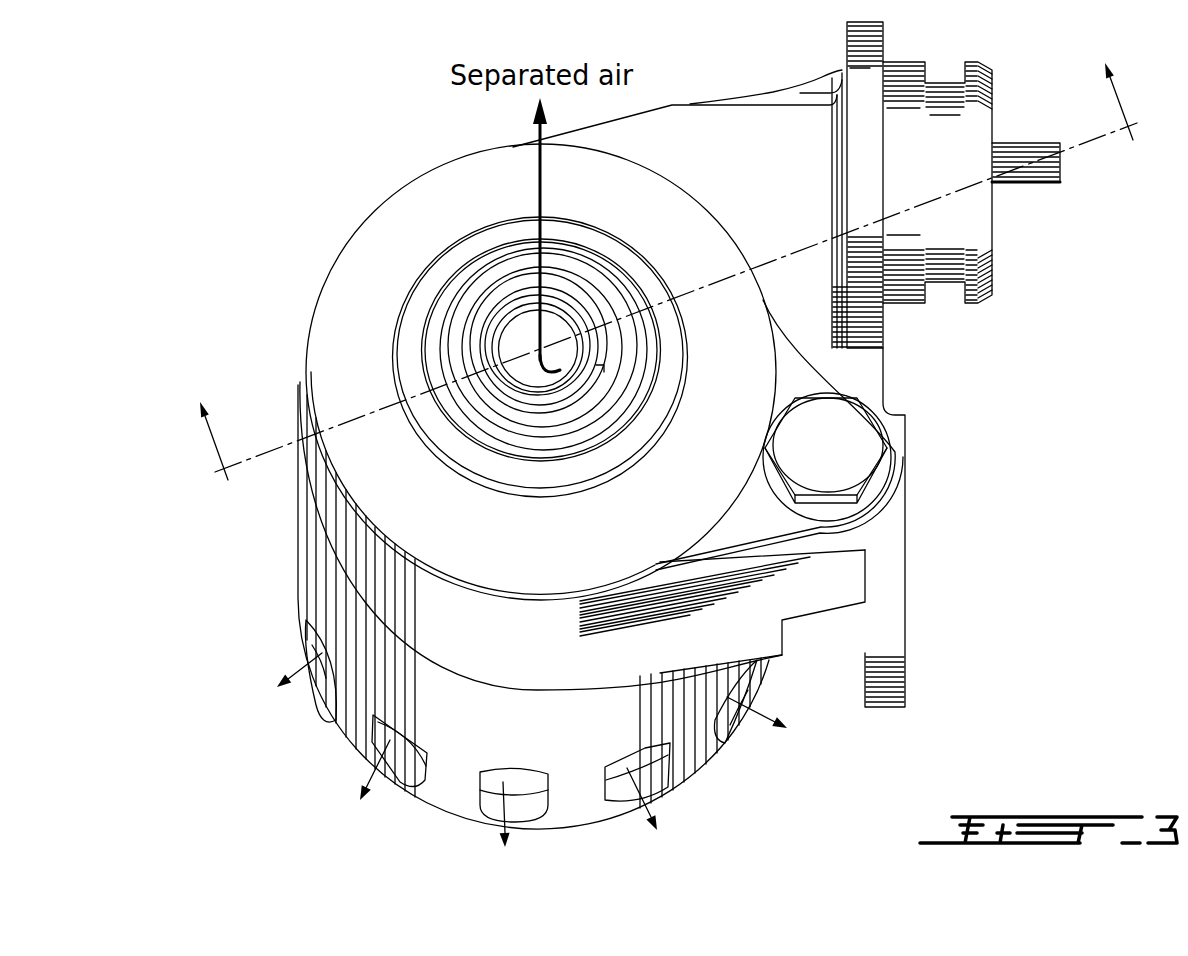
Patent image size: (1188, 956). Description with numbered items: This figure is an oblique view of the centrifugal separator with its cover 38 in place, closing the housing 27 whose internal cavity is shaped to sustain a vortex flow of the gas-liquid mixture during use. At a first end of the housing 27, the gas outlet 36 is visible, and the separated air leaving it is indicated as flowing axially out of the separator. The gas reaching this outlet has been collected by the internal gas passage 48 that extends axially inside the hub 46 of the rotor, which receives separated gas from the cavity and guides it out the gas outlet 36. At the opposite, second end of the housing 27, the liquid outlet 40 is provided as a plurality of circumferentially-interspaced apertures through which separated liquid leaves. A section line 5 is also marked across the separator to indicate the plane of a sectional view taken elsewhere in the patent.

The section line 5- 5 is at (678, 286).
The housing 27 is at (298, 381).
The gas outlet 36 is at (500, 347).
The cover 38 is at (390, 225).
The liquid outlet 40 is at (380, 735).
The hub 46 is at (597, 370).
The internal gas passage 48 is at (557, 328).